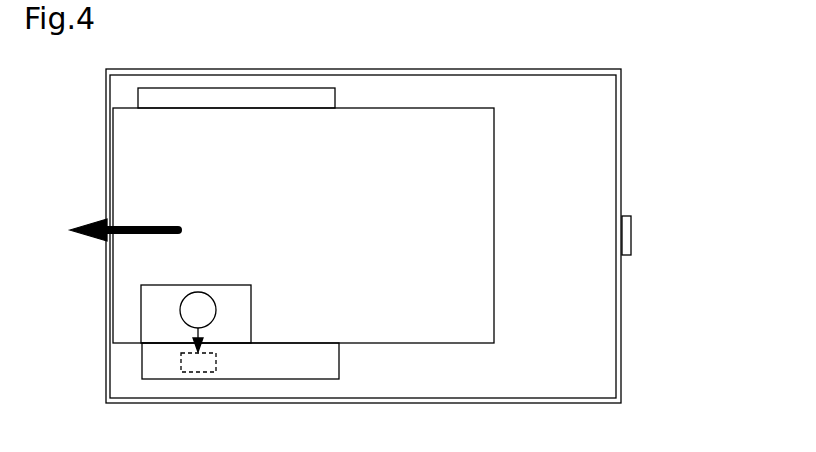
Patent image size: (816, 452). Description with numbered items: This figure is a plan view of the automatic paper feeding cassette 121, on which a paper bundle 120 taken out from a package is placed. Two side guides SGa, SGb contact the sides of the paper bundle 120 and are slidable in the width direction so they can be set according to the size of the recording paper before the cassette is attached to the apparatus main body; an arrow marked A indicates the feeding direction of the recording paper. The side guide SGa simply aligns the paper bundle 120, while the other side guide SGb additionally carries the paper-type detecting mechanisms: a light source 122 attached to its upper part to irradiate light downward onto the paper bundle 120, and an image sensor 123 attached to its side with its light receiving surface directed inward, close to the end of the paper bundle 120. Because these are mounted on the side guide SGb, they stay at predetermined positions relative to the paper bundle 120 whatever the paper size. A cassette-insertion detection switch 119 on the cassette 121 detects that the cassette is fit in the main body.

The cassette-insertion detection switch 119 is at (628, 230).
The paper bundle 120 is at (484, 209).
The automatic paper feeding cassette 121 is at (731, 120).
The light source 122 is at (203, 300).
The image sensor 123 is at (210, 370).
The side guide SGa is at (222, 96).
The side guide SGb is at (246, 323).